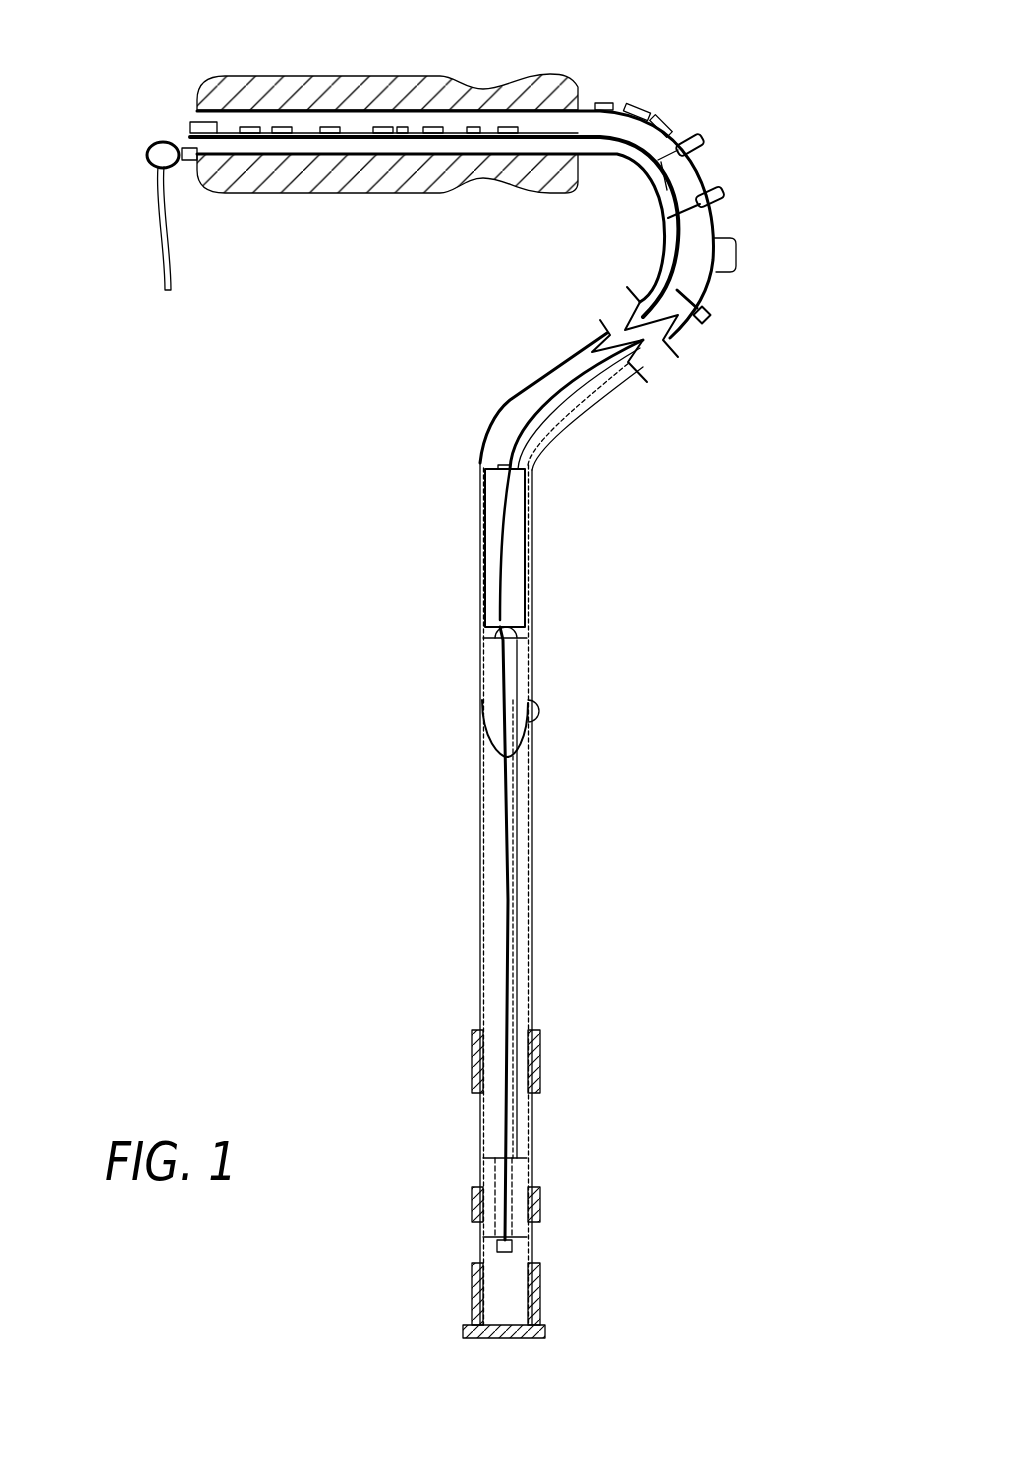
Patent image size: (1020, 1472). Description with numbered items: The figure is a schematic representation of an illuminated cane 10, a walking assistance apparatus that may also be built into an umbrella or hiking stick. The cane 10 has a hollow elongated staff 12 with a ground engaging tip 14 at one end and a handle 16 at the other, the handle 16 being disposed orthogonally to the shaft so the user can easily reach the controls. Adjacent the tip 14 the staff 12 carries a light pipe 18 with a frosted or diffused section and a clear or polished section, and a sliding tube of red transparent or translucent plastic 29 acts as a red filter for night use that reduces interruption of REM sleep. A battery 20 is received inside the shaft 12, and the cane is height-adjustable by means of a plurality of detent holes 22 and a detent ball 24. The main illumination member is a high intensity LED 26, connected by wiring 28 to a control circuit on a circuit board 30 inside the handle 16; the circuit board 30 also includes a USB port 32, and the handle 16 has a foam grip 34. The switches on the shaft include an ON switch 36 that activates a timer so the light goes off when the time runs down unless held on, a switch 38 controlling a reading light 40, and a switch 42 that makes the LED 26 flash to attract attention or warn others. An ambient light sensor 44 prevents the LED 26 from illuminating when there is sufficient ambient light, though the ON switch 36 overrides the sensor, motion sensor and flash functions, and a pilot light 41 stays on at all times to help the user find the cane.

The illuminated cane 10 is at (312, 415).
The elongated staff 12 is at (482, 543).
The ground engaging tip 14 is at (482, 1338).
The handle 16 is at (333, 76).
The light pipe 18 is at (533, 1265).
The battery 20 is at (515, 562).
The detent holes 22 is at (532, 840).
The detent ball 24 is at (543, 712).
The high intensity LED 26 is at (497, 1247).
The wiring 28 is at (508, 1133).
The sliding tube of red transparent or translucent plastic 29 is at (540, 1207).
The circuit board 30 is at (387, 143).
The USB port 32 is at (190, 127).
The foam grip 34 is at (221, 93).
The ON switch 36 is at (605, 103).
The switch 38 is at (631, 106).
The reading light 40 is at (722, 197).
The pilot light 41 is at (705, 141).
The switch 42 is at (665, 120).
The ambient light sensor 44 is at (708, 317).